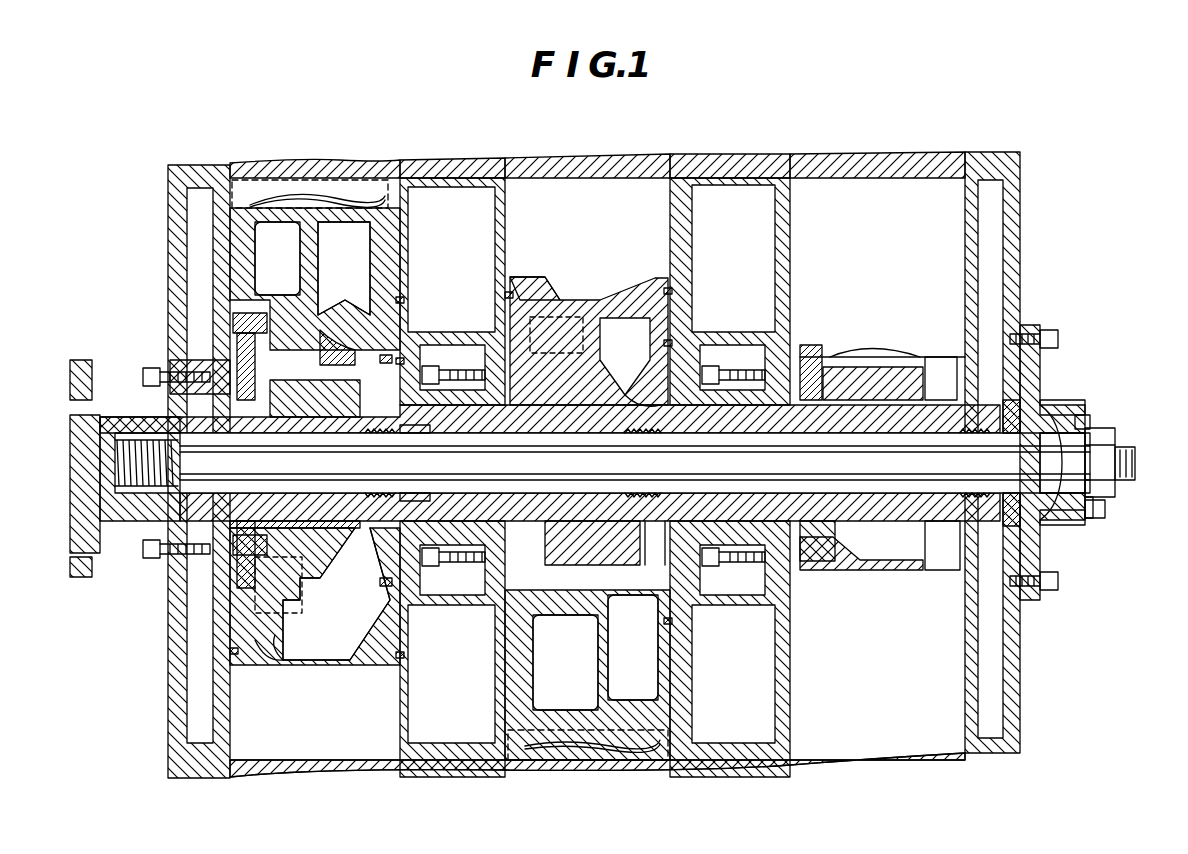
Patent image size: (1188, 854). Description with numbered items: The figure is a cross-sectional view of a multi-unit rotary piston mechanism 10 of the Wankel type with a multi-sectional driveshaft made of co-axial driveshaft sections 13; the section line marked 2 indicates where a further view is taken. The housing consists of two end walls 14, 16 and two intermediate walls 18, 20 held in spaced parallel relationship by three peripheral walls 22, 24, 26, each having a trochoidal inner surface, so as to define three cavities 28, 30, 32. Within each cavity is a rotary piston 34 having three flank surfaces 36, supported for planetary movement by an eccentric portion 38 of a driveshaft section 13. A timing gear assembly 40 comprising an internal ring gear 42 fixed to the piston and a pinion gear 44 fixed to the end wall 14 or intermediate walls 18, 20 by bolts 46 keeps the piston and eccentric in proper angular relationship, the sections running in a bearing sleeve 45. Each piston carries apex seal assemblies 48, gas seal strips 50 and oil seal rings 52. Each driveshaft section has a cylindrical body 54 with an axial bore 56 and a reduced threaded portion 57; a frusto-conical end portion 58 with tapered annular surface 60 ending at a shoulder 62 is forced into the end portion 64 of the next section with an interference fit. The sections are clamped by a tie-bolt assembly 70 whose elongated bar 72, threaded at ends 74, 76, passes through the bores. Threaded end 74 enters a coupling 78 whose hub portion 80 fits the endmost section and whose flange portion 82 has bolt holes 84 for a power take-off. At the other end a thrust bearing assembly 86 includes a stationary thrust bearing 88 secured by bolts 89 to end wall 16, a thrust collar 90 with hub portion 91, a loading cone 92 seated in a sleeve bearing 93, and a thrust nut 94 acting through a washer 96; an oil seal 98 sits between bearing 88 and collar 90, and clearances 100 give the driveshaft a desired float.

The section line 2 is at (392, 366).
The multi-unit rotary piston mechanism 10 is at (1053, 156).
The driveshaft section 13 is at (232, 400).
The end wall 14 is at (170, 258).
The end wall 16 is at (1012, 212).
The intermediate wall 18 is at (446, 165).
The intermediate wall 20 is at (736, 155).
The peripheral wall 22 is at (336, 165).
The peripheral wall 24 is at (590, 160).
The peripheral wall 26 is at (882, 155).
The cavity 28 is at (274, 729).
The cavity 30 is at (577, 211).
The cavity 32 is at (849, 211).
The rotary piston 34 is at (607, 291).
The flank surface 36 is at (540, 277).
The eccentric portion 38 is at (322, 360).
The timing gear assembly 40 is at (262, 382).
The internal ring gear 42 is at (232, 328).
The pinion gear 44 is at (250, 428).
The bearing sleeve 45 is at (723, 462).
The bolt 46 is at (143, 378).
The apex seal assembly 48 is at (356, 180).
The gas seal strip 50 is at (505, 295).
The oil seal ring 52 is at (404, 300).
The cylindrical body 54 is at (248, 470).
The axial bore 56 is at (620, 463).
The threaded portion 57 is at (686, 463).
The end portion 58 is at (708, 463).
The tapered annular surface 60 is at (410, 531).
The shoulder 62 is at (640, 405).
The end portion 64 is at (439, 463).
The tie-bolt assembly 70 is at (44, 341).
The elongated bar 72 is at (1138, 437).
The threaded end 74 is at (106, 500).
The threaded end 76 is at (1135, 470).
The coupling 78 is at (70, 470).
The hub portion 80 is at (142, 425).
The flange portion 82 is at (70, 540).
The bolt hole 84 is at (68, 565).
The thrust bearing assembly 86 is at (1073, 388).
The stationary thrust bearing 88 is at (1042, 400).
The bolt 89 is at (1045, 332).
The thrust collar 90 is at (1082, 404).
The hub portion 91 is at (1060, 463).
The loading cone 92 is at (992, 400).
The sleeve bearing 93 is at (905, 545).
The thrust nut 94 is at (1100, 505).
The washer 96 is at (1088, 508).
The oil seal 98 is at (1082, 420).
The clearance 100 is at (1055, 405).